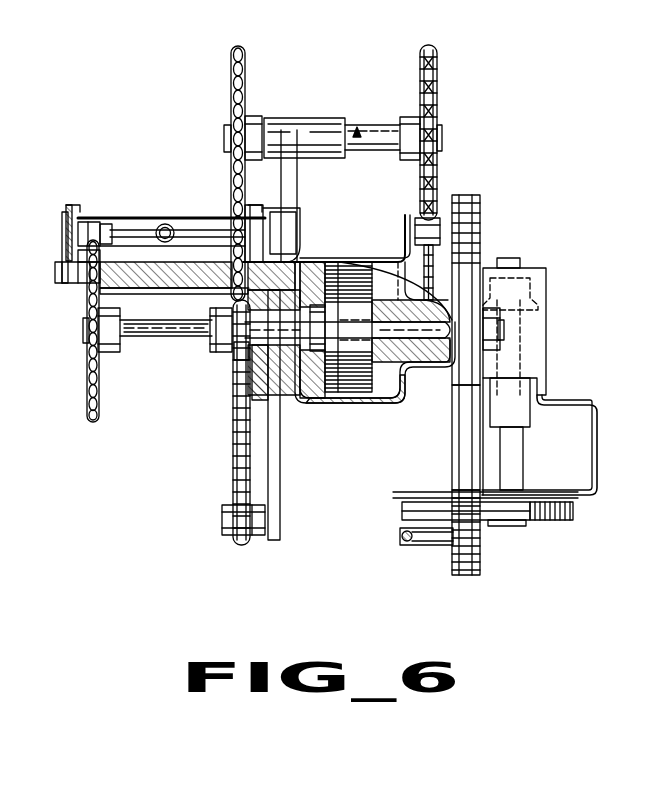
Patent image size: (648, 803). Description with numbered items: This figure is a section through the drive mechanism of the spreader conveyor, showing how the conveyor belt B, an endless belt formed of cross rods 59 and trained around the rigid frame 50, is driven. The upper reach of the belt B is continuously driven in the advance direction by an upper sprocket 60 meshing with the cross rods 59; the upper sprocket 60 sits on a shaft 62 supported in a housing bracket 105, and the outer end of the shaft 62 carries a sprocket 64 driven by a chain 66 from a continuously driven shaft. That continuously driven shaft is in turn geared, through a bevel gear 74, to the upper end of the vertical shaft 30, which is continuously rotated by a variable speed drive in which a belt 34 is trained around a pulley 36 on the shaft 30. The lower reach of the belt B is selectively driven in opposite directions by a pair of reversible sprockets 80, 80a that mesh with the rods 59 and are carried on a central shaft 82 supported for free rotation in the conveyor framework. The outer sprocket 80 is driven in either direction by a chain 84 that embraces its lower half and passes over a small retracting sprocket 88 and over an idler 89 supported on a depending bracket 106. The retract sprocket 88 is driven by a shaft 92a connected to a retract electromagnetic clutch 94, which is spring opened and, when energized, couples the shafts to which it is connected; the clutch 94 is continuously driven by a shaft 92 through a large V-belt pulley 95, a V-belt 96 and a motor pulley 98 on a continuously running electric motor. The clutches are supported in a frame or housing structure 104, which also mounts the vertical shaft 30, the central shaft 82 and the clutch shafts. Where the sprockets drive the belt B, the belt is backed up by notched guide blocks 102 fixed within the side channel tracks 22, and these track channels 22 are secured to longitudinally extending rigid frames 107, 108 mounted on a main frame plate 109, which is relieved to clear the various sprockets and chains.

The tracks 22 is at (75, 208).
The spreader conveyor belt B is at (121, 216).
The rigid frame 50 is at (172, 224).
The cross rods 59 is at (197, 216).
The upper sprocket 60 is at (231, 80).
The housing bracket 105 is at (297, 118).
The shaft 62 is at (363, 129).
The sprocket 64 is at (438, 80).
The chain 66 is at (438, 104).
The notched guide blocks 102 is at (75, 232).
The rigid frame 107 is at (276, 252).
The rigid frame 108 is at (75, 257).
The main frame plate 109 is at (68, 279).
The reversible sprocket 80a is at (90, 297).
The outer reversible sprocket 80 is at (215, 292).
The shaft 82 is at (157, 338).
The retracting sprocket 88 is at (243, 353).
The chain 84 is at (233, 415).
The idler 89 is at (222, 514).
The depending bracket 106 is at (283, 505).
The shaft 92a is at (287, 392).
The shaft 92 is at (411, 346).
The retract electromagnetic clutch 94 is at (393, 400).
The housing structure 104 is at (342, 408).
The large V-belt pulley 95 is at (480, 238).
The V-belt 96 is at (465, 441).
The motor pulley 98 is at (457, 571).
The bevel gear 74 is at (548, 311).
The vertical shaft 30 is at (530, 357).
The belt 34 is at (415, 508).
The pulley 36 is at (528, 520).